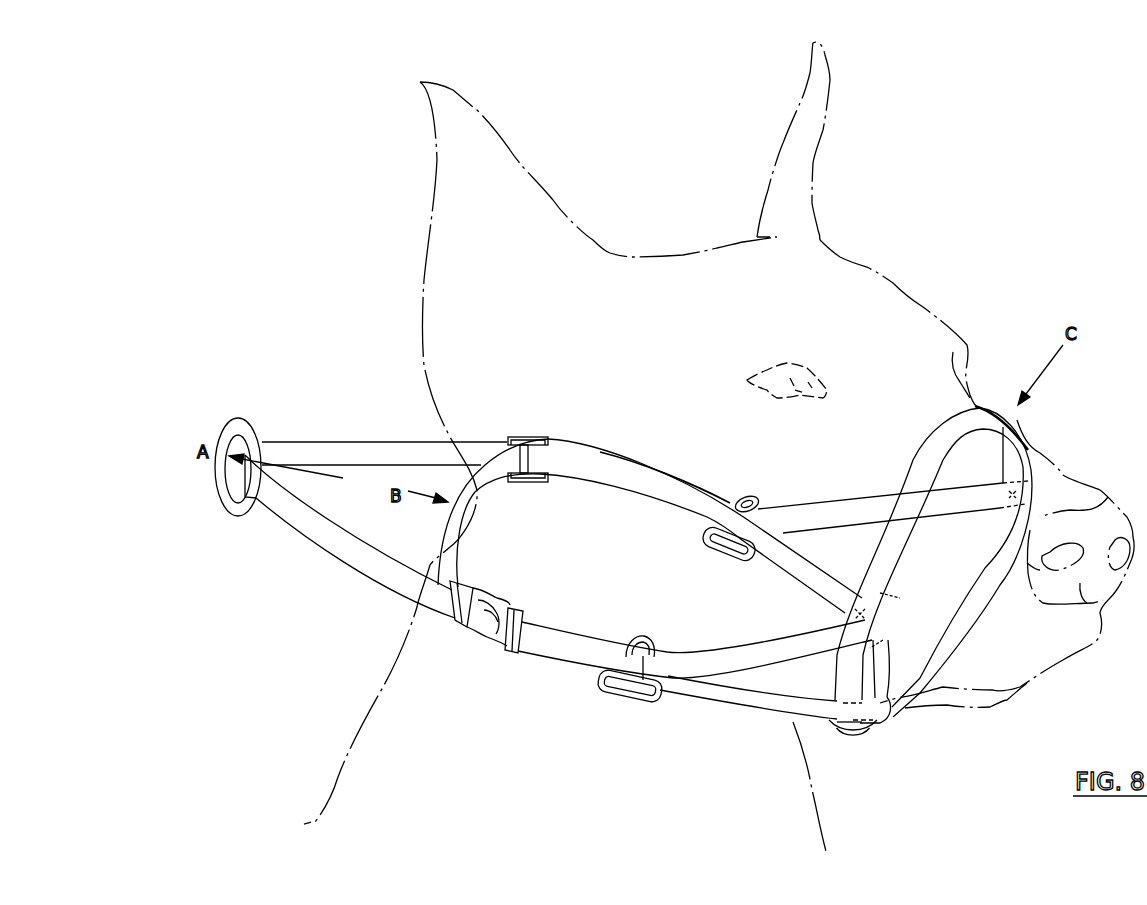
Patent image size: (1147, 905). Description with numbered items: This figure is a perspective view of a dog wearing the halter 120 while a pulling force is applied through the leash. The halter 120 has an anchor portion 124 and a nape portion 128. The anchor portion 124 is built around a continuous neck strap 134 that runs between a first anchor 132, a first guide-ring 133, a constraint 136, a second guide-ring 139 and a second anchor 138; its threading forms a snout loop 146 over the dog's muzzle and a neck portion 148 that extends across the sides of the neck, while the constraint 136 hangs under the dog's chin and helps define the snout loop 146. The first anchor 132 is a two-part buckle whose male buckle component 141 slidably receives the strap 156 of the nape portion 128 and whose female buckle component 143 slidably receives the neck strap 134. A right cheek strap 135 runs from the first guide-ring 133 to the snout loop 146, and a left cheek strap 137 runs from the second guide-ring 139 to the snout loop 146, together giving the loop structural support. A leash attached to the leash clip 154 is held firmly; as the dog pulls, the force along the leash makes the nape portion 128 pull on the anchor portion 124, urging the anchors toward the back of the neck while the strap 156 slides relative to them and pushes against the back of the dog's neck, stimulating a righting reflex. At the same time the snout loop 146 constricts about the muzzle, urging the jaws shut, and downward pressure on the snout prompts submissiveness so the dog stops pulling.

The halter 120 is at (650, 326).
The anchor portion 124 is at (551, 740).
The nape portion 128 is at (300, 634).
The first anchor 132 is at (497, 633).
The first guide-ring 133 is at (617, 693).
The neck strap 134 is at (617, 487).
The right cheek strap 135 is at (733, 652).
The constraint 136 is at (887, 737).
The left cheek strap 137 is at (792, 505).
The second anchor 138 is at (530, 420).
The second guide-ring 139 is at (723, 552).
The male buckle component 141 is at (463, 583).
The female buckle component 143 is at (522, 618).
The snout loop 146 is at (952, 584).
The neck portion 148 is at (634, 581).
The leash clip 154 is at (243, 418).
The strap 156 is at (380, 441).